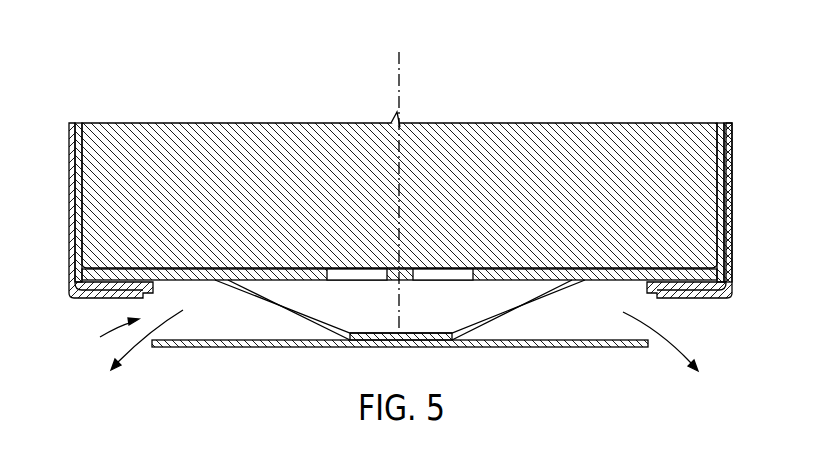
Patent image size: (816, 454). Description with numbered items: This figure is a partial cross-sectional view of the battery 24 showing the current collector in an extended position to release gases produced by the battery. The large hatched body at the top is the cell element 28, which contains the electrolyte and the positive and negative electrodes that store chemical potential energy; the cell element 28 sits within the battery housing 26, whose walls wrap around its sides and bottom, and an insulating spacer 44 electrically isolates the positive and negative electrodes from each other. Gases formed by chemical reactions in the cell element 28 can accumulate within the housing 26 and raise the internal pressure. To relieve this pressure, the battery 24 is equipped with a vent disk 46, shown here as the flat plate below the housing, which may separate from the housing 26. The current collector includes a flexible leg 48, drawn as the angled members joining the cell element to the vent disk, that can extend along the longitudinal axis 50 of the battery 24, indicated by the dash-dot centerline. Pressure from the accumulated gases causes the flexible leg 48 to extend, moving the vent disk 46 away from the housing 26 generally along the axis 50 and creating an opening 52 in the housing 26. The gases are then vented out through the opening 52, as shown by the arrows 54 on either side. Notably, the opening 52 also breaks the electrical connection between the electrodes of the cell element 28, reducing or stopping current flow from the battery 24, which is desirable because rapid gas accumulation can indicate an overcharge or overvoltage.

The battery 24 is at (64, 163).
The battery housing 26 is at (733, 147).
The cell element 28 is at (498, 125).
The insulating spacer 44 is at (719, 124).
The vent disk 46 is at (302, 348).
The flexible leg 48 is at (530, 306).
The longitudinal axis 50 is at (401, 67).
The opening 52 is at (107, 335).
The arrows 54 is at (130, 343).